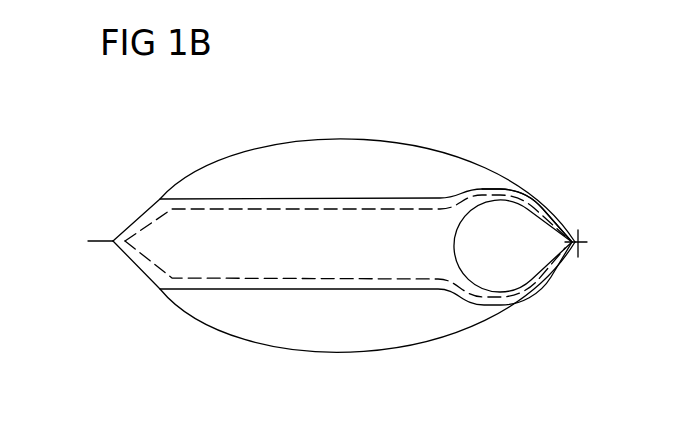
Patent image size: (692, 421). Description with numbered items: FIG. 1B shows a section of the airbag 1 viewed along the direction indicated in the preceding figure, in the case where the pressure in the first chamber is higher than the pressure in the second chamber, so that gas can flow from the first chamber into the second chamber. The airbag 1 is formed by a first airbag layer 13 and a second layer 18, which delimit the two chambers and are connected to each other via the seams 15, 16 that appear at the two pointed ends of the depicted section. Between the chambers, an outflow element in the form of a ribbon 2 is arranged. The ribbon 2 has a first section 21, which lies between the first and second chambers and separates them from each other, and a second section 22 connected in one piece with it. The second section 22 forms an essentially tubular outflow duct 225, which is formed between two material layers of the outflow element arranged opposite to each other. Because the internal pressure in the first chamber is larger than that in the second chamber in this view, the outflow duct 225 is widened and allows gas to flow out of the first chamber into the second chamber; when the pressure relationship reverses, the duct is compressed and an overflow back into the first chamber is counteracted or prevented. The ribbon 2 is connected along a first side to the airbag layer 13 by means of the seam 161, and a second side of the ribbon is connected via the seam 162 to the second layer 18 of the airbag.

The airbag 1 is at (355, 240).
The ribbon 2 is at (357, 221).
The first airbag layer 13 is at (273, 330).
The seam 15 is at (588, 247).
The seam 16 is at (100, 240).
The second layer 18 is at (277, 162).
The first section 21 is at (318, 228).
The second section 22 is at (505, 195).
The seam 161 is at (348, 279).
The seam 162 is at (262, 211).
The outflow duct 225 is at (522, 265).